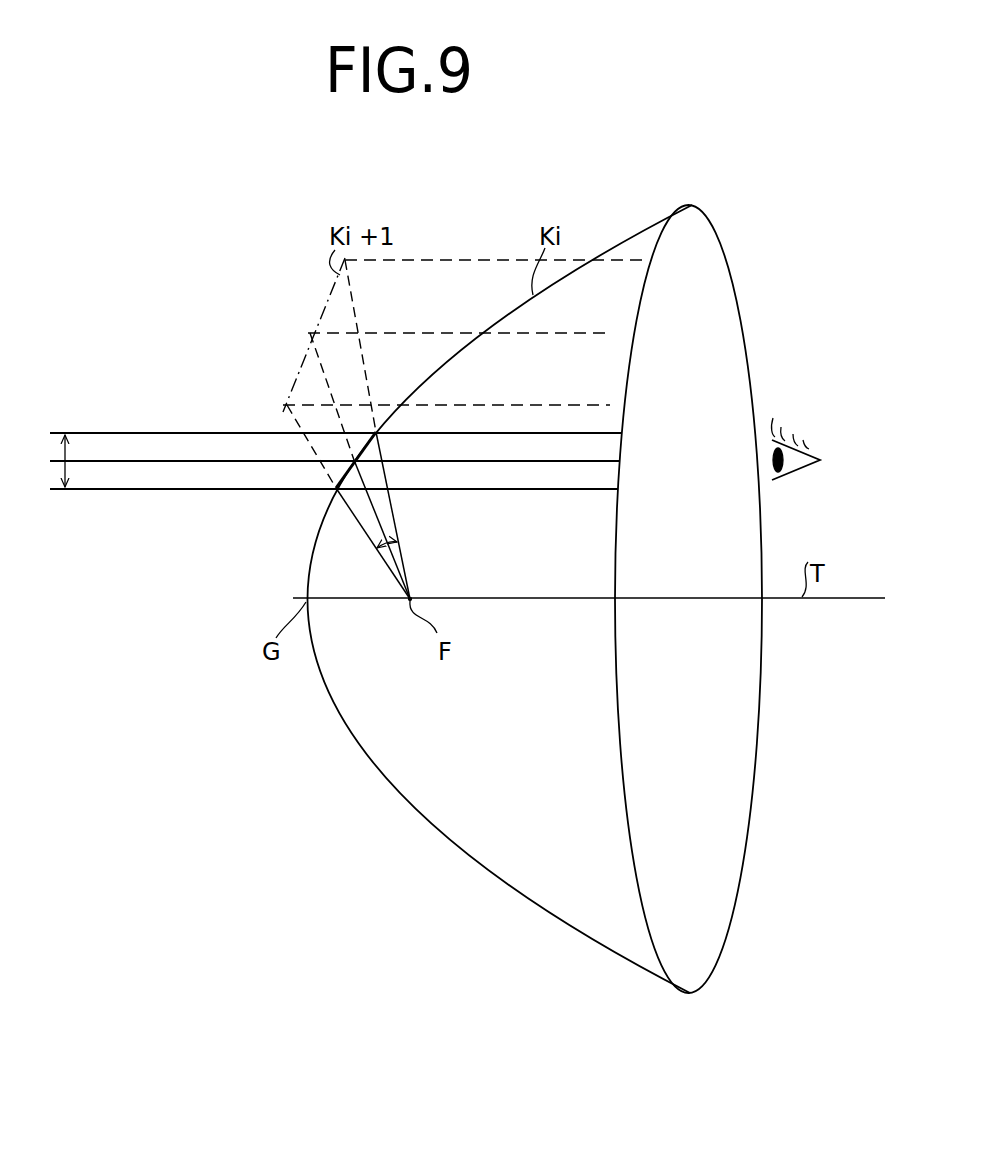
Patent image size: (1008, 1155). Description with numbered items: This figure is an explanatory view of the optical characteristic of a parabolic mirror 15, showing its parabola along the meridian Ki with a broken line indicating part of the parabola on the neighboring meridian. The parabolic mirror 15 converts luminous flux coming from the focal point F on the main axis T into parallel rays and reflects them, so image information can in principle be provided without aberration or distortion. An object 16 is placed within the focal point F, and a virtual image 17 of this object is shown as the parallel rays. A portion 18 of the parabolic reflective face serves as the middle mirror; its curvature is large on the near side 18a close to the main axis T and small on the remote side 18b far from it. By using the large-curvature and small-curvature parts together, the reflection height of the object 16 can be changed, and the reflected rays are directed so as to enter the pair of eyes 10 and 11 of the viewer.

The eye 10 is at (829, 436).
The eye 11 is at (803, 433).
The parabolic mirror 15 is at (397, 794).
The object 16 is at (398, 537).
The virtual image 17 is at (67, 453).
The portion of the parabolic reflective face 18 is at (354, 460).
The near side of the portion 18a is at (336, 488).
The remote side of the portion 18b is at (376, 432).